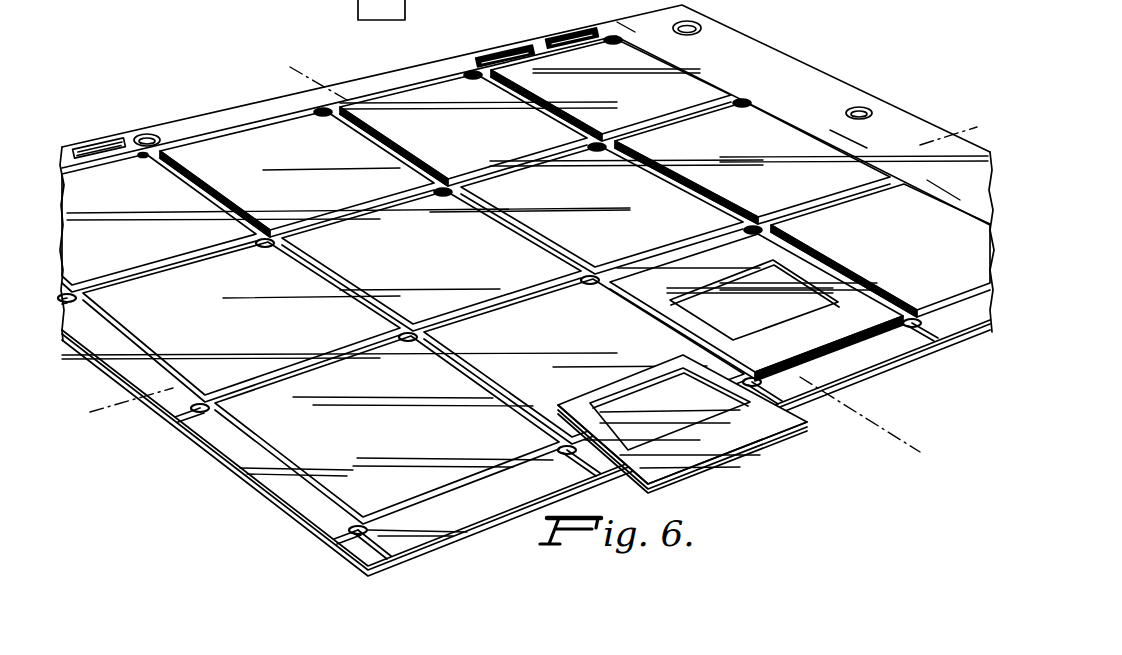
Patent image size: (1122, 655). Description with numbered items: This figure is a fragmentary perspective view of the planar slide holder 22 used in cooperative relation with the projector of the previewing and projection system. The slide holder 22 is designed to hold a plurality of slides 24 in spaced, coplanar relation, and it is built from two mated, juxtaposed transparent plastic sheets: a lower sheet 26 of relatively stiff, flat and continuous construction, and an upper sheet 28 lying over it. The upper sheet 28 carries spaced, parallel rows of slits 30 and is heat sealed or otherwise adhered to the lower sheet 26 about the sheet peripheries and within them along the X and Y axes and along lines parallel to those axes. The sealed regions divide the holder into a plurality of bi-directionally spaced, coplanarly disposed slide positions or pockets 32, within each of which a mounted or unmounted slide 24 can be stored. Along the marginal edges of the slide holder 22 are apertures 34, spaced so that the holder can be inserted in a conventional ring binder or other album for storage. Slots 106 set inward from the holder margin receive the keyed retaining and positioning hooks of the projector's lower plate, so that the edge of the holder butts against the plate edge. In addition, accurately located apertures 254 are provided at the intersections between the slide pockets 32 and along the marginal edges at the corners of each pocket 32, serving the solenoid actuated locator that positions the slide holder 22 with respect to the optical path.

The slide holder 22 is at (258, 502).
The slide 24 is at (651, 428).
The lower sheet 26 is at (390, 571).
The upper sheet 28 is at (392, 562).
The slit 30 is at (807, 355).
The slide pocket 32 is at (183, 332).
The aperture 34 is at (144, 133).
The slot 106 is at (91, 146).
The aperture 254 is at (740, 99).